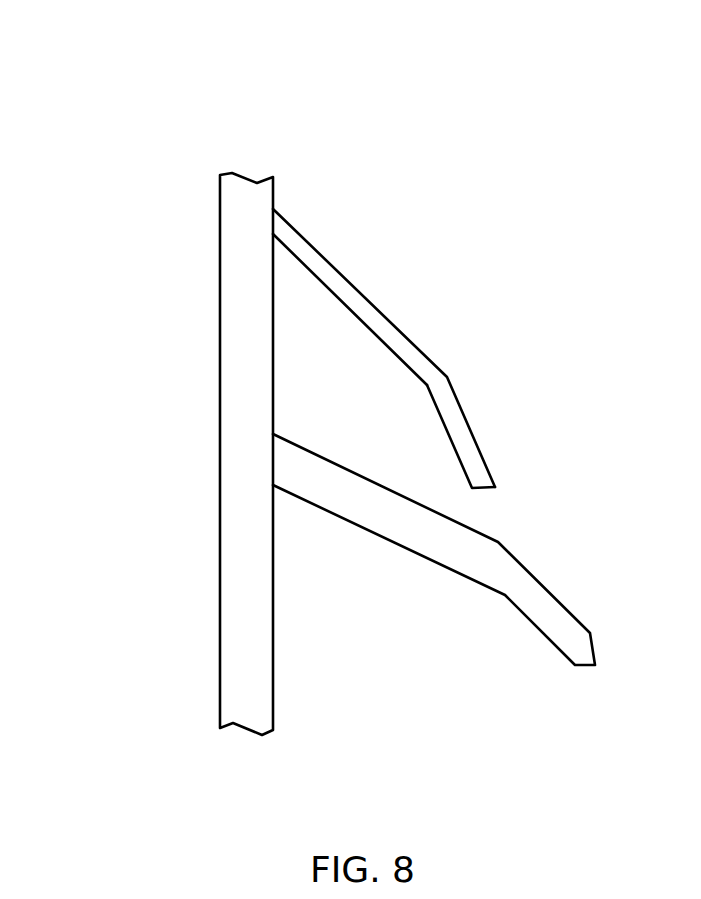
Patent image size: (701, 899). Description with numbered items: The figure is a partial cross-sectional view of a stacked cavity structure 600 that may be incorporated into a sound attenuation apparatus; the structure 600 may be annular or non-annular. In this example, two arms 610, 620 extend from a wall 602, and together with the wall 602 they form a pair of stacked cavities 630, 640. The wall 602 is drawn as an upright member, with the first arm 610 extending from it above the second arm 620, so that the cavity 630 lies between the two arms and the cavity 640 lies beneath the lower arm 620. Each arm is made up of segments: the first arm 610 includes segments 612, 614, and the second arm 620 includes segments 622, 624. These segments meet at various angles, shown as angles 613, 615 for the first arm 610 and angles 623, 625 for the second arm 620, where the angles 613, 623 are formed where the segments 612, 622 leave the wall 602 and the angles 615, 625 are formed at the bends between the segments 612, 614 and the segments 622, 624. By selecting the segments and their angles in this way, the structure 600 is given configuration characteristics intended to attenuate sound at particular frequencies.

The stacked cavity structure 600 is at (110, 118).
The wall 602 is at (221, 391).
The arm 610 is at (410, 340).
The segment 612 is at (377, 337).
The angle 613 is at (302, 262).
The segment 614 is at (469, 423).
The angle 615 is at (409, 367).
The arm 620 is at (291, 436).
The segment 622 is at (388, 530).
The angle 623 is at (311, 503).
The segment 624 is at (529, 569).
The angle 625 is at (473, 579).
The cavity 630 is at (376, 405).
The cavity 640 is at (405, 652).